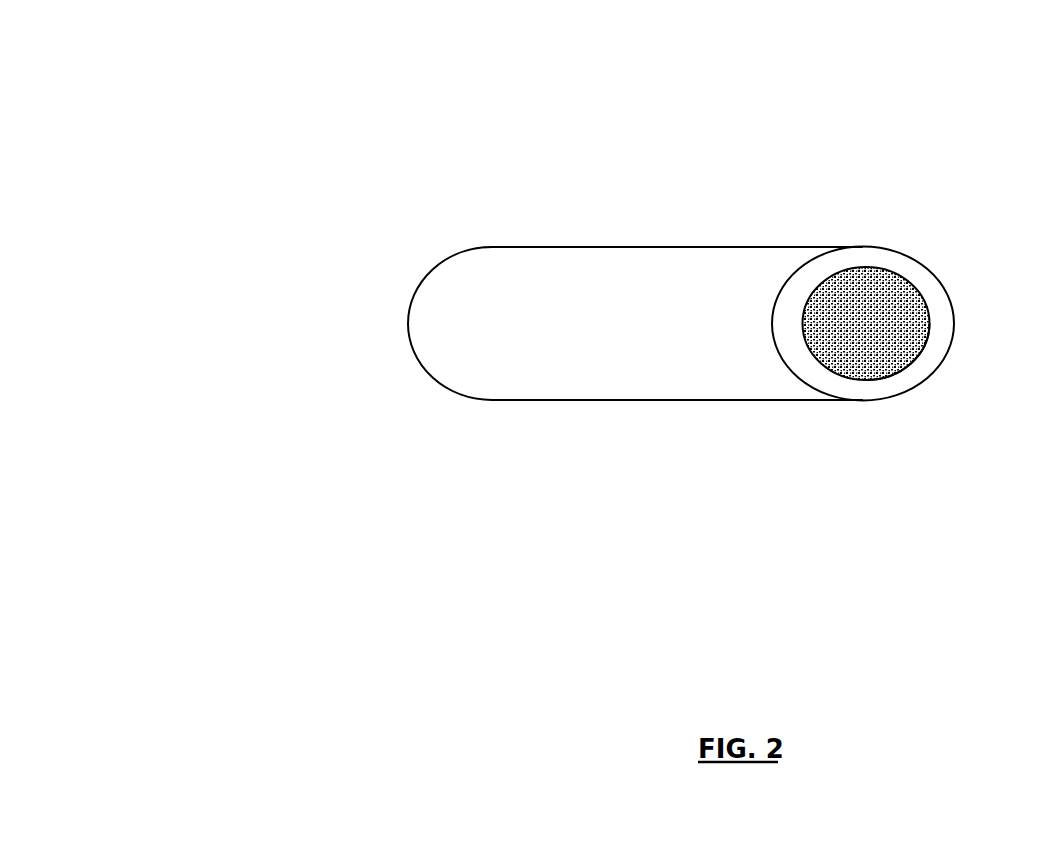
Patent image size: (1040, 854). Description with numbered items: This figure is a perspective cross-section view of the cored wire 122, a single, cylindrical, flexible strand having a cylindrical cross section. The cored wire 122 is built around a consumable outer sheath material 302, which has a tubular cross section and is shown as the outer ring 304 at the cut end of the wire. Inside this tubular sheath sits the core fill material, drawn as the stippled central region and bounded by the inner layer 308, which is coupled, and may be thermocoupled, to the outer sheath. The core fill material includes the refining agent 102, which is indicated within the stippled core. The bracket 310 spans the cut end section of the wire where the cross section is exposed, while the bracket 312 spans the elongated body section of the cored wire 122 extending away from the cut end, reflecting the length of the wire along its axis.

The cored wire 122 is at (220, 52).
The outer sheath material 302 is at (610, 247).
The outer jacket 304 is at (913, 278).
The refining agent 102 is at (903, 330).
The inner layer 308 is at (901, 372).
The end section 310 is at (957, 200).
The body section 312 is at (772, 410).